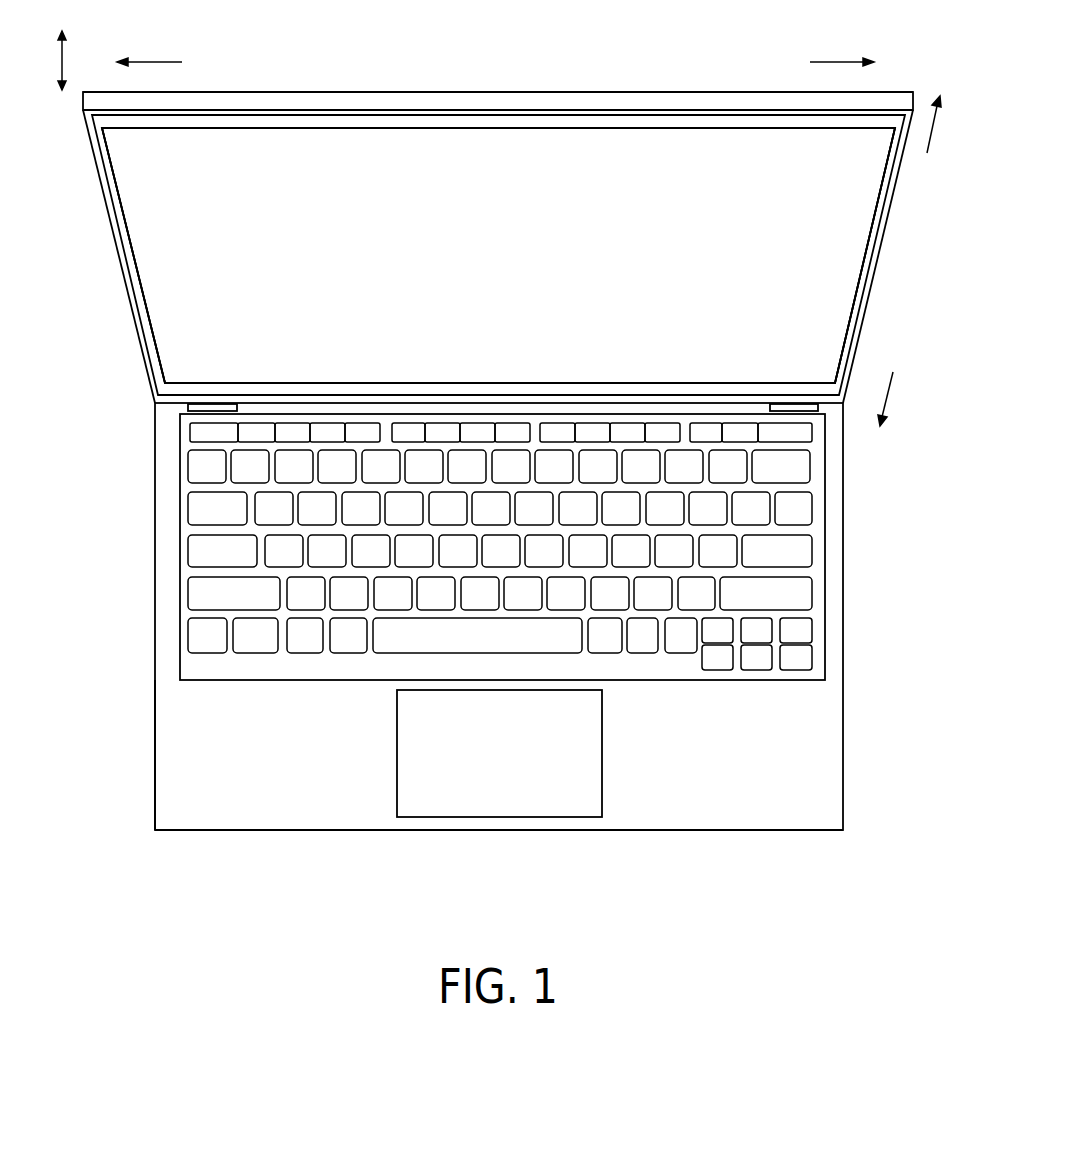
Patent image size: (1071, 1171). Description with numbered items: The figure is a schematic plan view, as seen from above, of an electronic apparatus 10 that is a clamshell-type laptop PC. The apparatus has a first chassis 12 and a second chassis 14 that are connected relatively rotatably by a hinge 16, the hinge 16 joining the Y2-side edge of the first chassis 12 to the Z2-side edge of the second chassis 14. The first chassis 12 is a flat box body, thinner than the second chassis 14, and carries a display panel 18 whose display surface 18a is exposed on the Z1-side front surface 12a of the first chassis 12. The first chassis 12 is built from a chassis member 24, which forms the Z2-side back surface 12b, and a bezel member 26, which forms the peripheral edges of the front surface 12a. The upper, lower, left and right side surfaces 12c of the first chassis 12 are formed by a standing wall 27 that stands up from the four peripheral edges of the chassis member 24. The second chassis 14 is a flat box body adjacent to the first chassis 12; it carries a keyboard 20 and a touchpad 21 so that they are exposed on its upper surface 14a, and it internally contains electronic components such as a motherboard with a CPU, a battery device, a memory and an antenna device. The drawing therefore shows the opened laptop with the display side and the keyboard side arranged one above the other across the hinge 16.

The electronic apparatus 10 is at (80, 209).
The first chassis 12 is at (891, 200).
The front surface 12a is at (213, 160).
The back surface 12b is at (435, 92).
The side surfaces 12c is at (912, 296).
The second chassis 14 is at (857, 584).
The upper surface 14a is at (177, 738).
The hinge 16 is at (209, 405).
The display panel 18 is at (690, 168).
The display surface 18a is at (610, 170).
The keyboard 20 is at (643, 665).
The touchpad 21 is at (482, 795).
The chassis member 24 is at (498, 64).
The bezel member 26 is at (527, 125).
The standing wall 27 is at (318, 100).